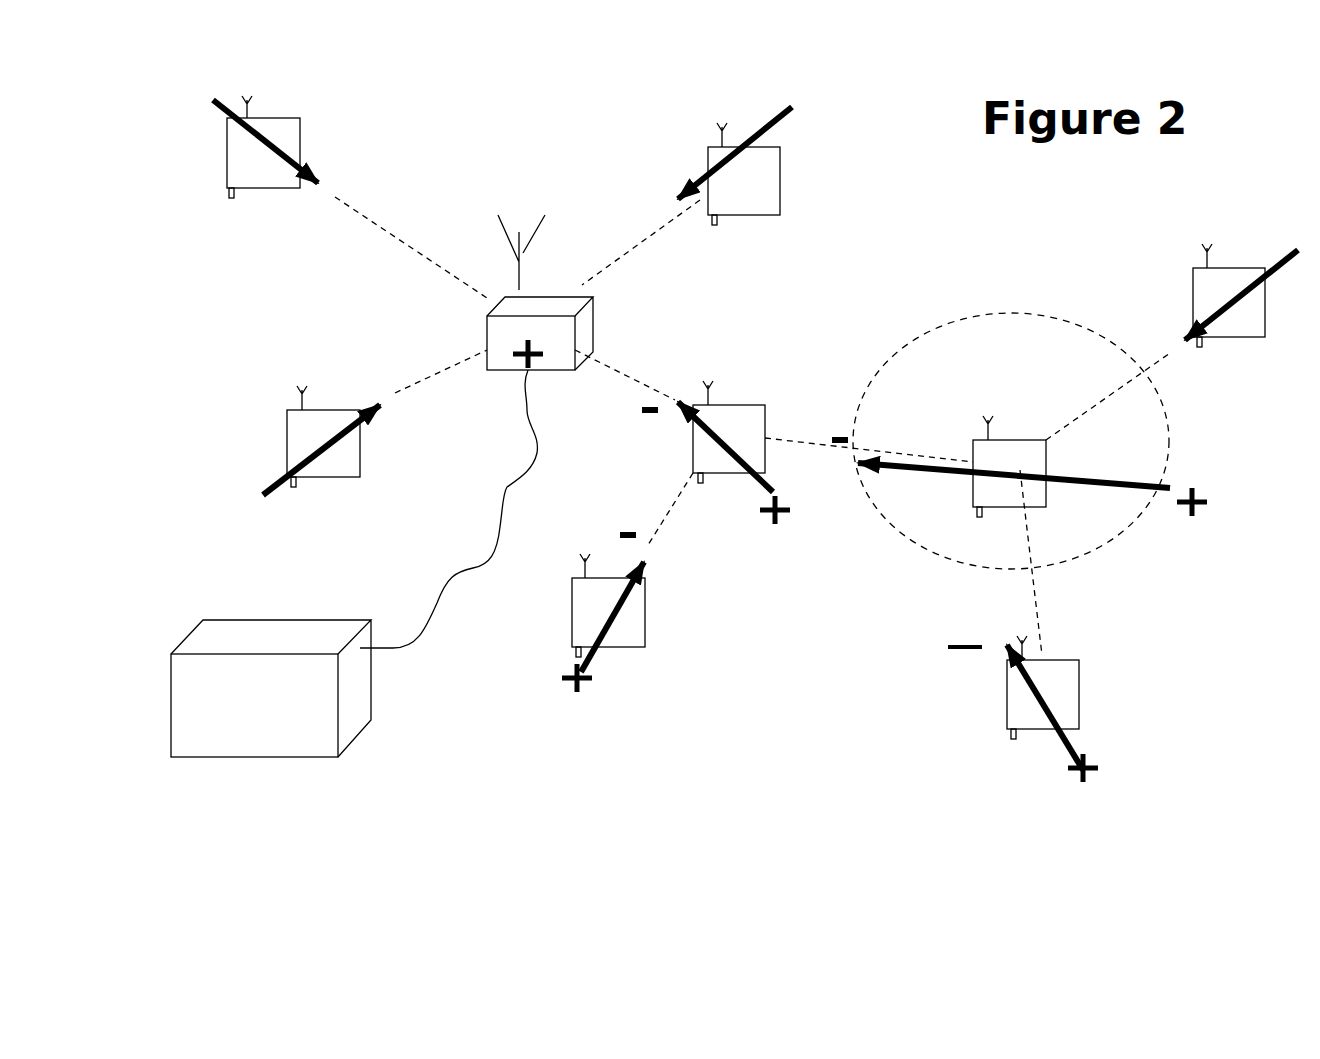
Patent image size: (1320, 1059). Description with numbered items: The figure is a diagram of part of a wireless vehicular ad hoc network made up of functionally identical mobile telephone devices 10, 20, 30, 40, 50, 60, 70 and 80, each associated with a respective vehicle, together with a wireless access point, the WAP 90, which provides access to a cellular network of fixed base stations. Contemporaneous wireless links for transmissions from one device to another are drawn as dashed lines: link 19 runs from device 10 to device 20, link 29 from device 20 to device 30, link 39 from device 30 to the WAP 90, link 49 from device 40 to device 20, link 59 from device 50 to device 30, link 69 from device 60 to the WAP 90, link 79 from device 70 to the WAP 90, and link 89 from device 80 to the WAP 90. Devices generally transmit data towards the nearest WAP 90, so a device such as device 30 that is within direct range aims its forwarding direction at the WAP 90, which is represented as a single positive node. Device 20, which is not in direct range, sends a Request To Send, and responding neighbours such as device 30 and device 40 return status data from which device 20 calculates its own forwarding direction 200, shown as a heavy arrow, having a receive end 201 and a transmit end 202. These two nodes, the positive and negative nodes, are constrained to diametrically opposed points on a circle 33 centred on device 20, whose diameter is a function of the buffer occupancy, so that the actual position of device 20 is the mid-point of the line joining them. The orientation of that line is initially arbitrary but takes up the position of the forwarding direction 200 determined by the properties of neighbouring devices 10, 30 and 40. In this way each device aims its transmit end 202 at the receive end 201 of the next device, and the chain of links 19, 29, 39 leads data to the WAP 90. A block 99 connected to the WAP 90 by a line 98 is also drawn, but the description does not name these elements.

The mobile telephone device 10 is at (1241, 293).
The mobile telephone device 20 is at (1013, 464).
The mobile telephone device 30 is at (716, 451).
The mobile telephone device 40 is at (1044, 709).
The mobile telephone device 50 is at (626, 613).
The mobile telephone device 60 is at (321, 440).
The mobile telephone device 70 is at (735, 163).
The mobile telephone device 80 is at (265, 146).
The WAP 90 is at (540, 292).
The network server 99 is at (294, 688).
The connection cable 98 is at (448, 509).
The link 19 is at (1158, 352).
The link 29 is at (794, 442).
The link 39 is at (607, 387).
The link 49 is at (1053, 635).
The link 59 is at (677, 500).
The link 69 is at (452, 362).
The link 79 is at (663, 212).
The link 89 is at (357, 213).
The circle 33 is at (945, 325).
The forwarding direction 200 is at (918, 470).
The receive end 201 is at (1184, 508).
The transmit end 202 is at (877, 440).